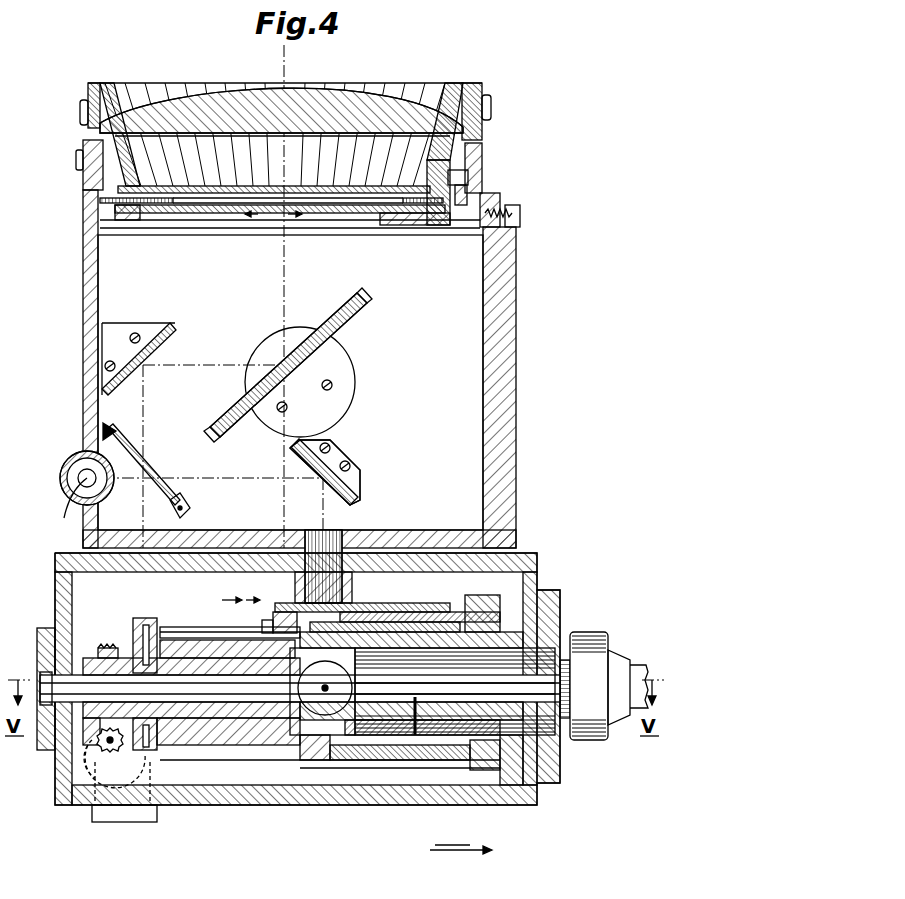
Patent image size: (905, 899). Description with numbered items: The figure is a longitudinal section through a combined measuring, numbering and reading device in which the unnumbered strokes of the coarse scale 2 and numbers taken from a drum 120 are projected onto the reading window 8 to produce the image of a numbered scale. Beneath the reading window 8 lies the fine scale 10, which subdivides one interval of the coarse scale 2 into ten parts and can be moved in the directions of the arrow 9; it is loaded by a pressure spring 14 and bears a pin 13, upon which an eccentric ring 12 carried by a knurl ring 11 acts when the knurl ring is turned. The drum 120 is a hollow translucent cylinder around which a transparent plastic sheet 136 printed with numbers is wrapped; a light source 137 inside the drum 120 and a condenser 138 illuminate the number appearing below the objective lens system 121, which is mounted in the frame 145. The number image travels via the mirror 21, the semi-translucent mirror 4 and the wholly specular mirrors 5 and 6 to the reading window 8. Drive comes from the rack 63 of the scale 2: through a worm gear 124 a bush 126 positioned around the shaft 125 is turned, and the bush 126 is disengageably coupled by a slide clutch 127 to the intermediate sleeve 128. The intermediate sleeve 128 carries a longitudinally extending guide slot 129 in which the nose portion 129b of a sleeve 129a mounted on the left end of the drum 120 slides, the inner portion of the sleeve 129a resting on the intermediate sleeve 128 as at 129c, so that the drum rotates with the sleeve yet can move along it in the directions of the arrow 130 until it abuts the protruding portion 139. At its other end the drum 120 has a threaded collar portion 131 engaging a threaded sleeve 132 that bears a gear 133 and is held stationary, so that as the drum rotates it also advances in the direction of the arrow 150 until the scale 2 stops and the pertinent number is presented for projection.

The knurl ring 11 is at (488, 113).
The reading window 8 is at (340, 198).
The eccentric ring 12 is at (437, 180).
The pin 13 is at (486, 189).
The pressure spring 14 is at (513, 213).
The arrow 9 is at (270, 222).
The scale 10 is at (375, 214).
The wholly specular mirror 6 is at (355, 304).
The wholly specular mirror 5 is at (172, 340).
The semi-translucent mirror 4 is at (120, 453).
The mirror 21 is at (297, 460).
The objective lens system 121 is at (300, 548).
The frame 145 is at (528, 548).
The slide clutch 127 is at (145, 618).
The arrow 130 is at (235, 588).
The sleeve 129a is at (276, 612).
The longitudinally extending guide slot 129 is at (185, 627).
The nose portion 129b is at (265, 624).
The condenser 138 is at (356, 607).
The transparent plastic sheet 136 is at (420, 612).
The threaded collar portion 131 is at (476, 612).
The shaft 125 is at (130, 660).
The light source 137 is at (330, 687).
The worm gear 124 is at (100, 742).
The protruding portion 139 is at (158, 748).
The bush 126 is at (232, 722).
The rest location 129c is at (290, 760).
The rack 63 is at (94, 820).
The scale 2 is at (120, 823).
The intermediate sleeve 128 is at (195, 745).
The drum 120 is at (350, 770).
The threaded sleeve 132 is at (412, 736).
The gear 133 is at (512, 770).
The arrow 150 is at (458, 850).